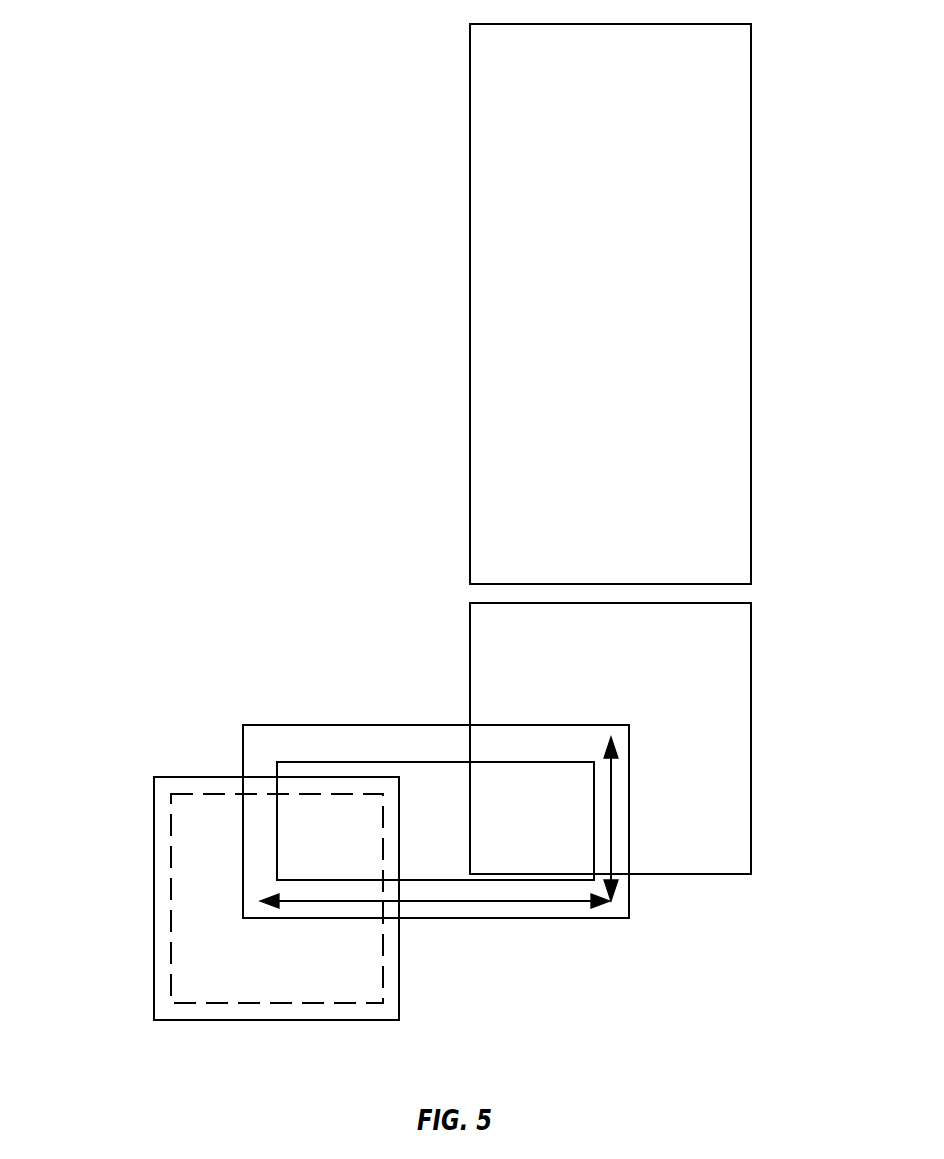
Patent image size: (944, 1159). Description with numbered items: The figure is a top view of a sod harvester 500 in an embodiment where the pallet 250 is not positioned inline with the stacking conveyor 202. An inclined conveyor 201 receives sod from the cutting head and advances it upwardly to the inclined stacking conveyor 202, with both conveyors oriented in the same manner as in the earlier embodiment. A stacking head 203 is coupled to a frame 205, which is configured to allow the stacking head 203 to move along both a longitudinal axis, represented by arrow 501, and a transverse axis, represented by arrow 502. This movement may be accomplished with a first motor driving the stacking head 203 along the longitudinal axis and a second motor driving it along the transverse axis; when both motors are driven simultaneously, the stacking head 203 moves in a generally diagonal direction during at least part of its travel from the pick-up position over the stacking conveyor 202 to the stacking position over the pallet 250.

The sod harvester 500 is at (190, 315).
The inclined conveyor 201 is at (752, 431).
The inclined stacking conveyor 202 is at (468, 707).
The stacking head 203 is at (235, 793).
The frame 205 is at (595, 918).
The pallet 250 is at (155, 900).
The arrow 501 is at (612, 813).
The arrow 502 is at (433, 901).